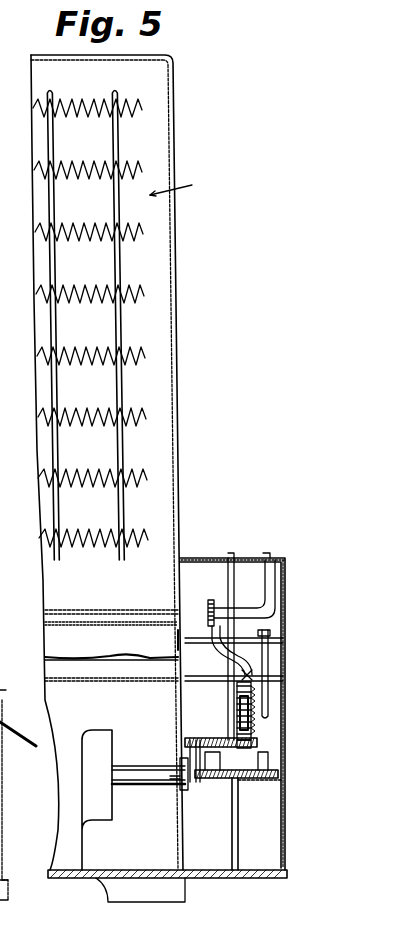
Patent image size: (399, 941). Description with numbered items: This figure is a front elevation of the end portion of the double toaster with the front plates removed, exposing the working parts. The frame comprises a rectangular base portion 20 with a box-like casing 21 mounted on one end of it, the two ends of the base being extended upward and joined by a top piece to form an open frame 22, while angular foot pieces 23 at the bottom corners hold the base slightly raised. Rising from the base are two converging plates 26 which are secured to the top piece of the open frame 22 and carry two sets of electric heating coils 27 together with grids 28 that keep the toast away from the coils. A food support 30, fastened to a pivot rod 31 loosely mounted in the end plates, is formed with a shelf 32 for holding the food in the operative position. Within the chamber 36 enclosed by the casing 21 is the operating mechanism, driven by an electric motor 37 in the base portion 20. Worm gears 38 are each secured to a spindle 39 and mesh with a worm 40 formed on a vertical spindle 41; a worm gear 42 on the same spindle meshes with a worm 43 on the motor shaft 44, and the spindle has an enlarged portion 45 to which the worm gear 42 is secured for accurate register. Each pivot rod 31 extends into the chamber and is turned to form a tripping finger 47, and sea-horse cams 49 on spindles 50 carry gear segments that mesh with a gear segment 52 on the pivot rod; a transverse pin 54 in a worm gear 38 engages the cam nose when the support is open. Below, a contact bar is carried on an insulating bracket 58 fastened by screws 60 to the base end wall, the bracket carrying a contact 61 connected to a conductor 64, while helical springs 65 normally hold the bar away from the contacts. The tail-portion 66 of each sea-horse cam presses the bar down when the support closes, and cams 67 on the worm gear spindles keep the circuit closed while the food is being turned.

The base portion 20 is at (12, 801).
The box-like casing 21 is at (293, 806).
The open frame 22 is at (181, 263).
The angular foot pieces 23 is at (181, 893).
The converging plates 26 is at (180, 185).
The electric heating coils 27 is at (128, 340).
The grids 28 is at (112, 401).
The food-supports 30 is at (5, 723).
The pivot rod 31 is at (180, 603).
The shelf 32 is at (16, 689).
The chamber 36 is at (259, 805).
The electric motor 37 is at (72, 714).
The worm gears 38 is at (252, 705).
The spindle 39 is at (195, 684).
The worm 40 is at (252, 695).
The vertical spindle 41 is at (232, 847).
The worm gear 42 is at (287, 773).
The worm 43 is at (250, 779).
The motor shaft 44 is at (149, 788).
The enlarged portion 45 is at (228, 727).
The tripping finger 47 is at (273, 594).
The sea-horse cams 49 is at (216, 653).
The spindles 50 is at (182, 640).
The gear segment 52 is at (213, 600).
The transverse pin 54 is at (250, 746).
The bracket 58 is at (182, 756).
The screws 60 is at (176, 776).
The contact 61 is at (261, 731).
The conductor 64 is at (228, 700).
The helical springs 65 is at (268, 714).
The tail-portion 66 is at (252, 665).
The cams 67 is at (268, 680).